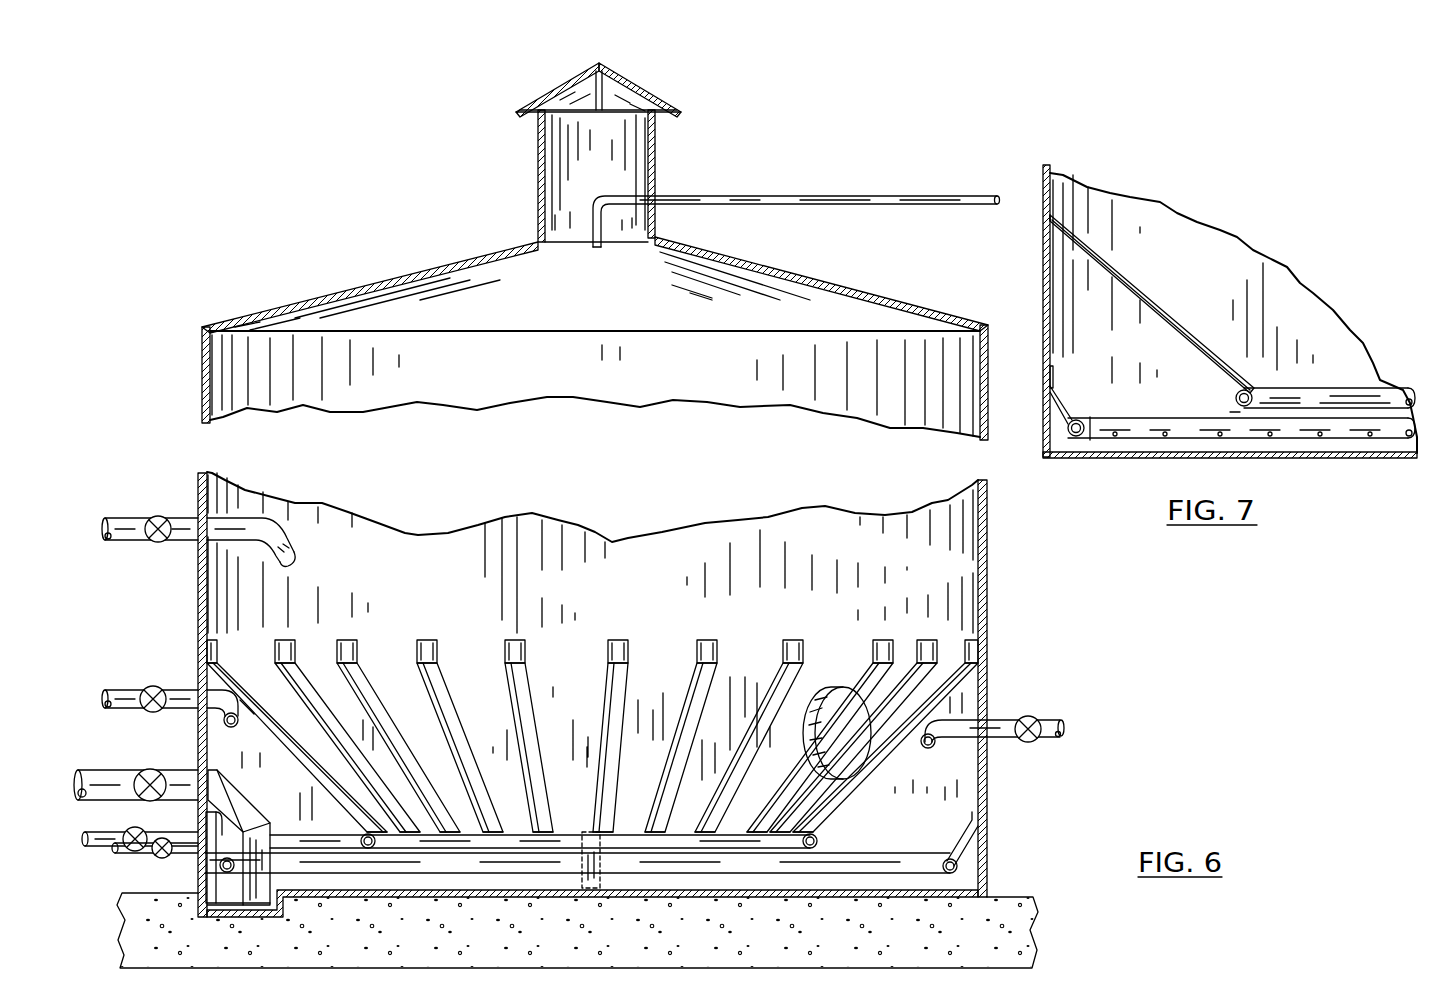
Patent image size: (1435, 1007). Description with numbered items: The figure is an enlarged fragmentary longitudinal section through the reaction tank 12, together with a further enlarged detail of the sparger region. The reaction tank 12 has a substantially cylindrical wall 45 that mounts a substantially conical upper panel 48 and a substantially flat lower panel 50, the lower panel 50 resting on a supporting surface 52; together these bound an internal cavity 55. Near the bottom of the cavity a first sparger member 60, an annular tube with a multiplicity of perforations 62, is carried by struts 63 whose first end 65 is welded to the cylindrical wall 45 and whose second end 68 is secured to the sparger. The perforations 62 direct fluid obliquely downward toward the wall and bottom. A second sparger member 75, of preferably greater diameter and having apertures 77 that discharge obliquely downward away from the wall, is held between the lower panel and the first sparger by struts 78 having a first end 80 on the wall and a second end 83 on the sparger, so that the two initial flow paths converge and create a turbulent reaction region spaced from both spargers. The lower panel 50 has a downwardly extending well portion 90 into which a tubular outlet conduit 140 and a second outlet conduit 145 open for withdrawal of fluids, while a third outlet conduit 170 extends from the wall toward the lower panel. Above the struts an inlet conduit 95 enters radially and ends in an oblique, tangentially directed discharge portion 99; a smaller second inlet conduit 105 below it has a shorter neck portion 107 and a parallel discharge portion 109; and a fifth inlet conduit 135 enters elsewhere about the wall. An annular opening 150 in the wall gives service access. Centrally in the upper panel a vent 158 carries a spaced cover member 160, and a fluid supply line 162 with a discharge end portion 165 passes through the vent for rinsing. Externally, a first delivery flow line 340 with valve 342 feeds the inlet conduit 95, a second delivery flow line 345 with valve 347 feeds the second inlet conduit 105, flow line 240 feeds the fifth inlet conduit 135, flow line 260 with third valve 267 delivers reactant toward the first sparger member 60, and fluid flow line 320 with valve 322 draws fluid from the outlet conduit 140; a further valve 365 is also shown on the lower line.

In FIG. 6, the reaction tank 12 is at (216, 307).
In FIG. 6, the cylindrical wall 45 is at (988, 578).
In FIG. 7, the cylindrical wall 45 is at (1043, 282).
In FIG. 6, the upper panel 48 is at (868, 290).
In FIG. 6, the lower panel 50 is at (848, 878).
In FIG. 7, the lower panel 50 is at (1307, 447).
In FIG. 6, the supporting surface 52 is at (998, 895).
In FIG. 6, the internal chamber or cavity 55 is at (243, 367).
In FIG. 6, the first sparger member 60 is at (818, 839).
In FIG. 7, the first sparger member 60 is at (1312, 388).
In FIG. 7, the perforations 62 is at (1233, 407).
In FIG. 6, the struts 63 is at (618, 691).
In FIG. 7, the struts 63 is at (1140, 290).
In FIG. 6, the first end 65 is at (799, 642).
In FIG. 7, the first end 65 is at (1053, 198).
In FIG. 6, the second end 68 is at (590, 825).
In FIG. 7, the second end 68 is at (1249, 386).
In FIG. 6, the second sparger member 75 is at (880, 876).
In FIG. 7, the second sparger member 75 is at (1177, 420).
In FIG. 7, the apertures 77 is at (1092, 438).
In FIG. 6, the struts 78 is at (958, 833).
In FIG. 7, the struts 78 is at (1068, 404).
In FIG. 7, the first end 80 is at (1053, 379).
In FIG. 7, the second end 83 is at (1093, 418).
In FIG. 6, the well portion 90 is at (240, 910).
In FIG. 6, the inlet conduit 95 is at (229, 520).
In FIG. 6, the discharge portion 99 is at (283, 550).
In FIG. 6, the second inlet conduit 105 is at (223, 690).
In FIG. 6, the neck portion 107 is at (233, 728).
In FIG. 6, the discharge portion 109 is at (257, 713).
In FIG. 6, the fifth inlet conduit 135 is at (950, 745).
In FIG. 6, the outlet conduit 140 is at (240, 800).
In FIG. 6, the second outlet conduit 145 is at (206, 883).
In FIG. 6, the annular opening 150 is at (818, 733).
In FIG. 6, the vent 158 is at (656, 152).
In FIG. 6, the cover member 160 is at (642, 92).
In FIG. 6, the fluid supply line 162 is at (800, 197).
In FIG. 6, the discharge end portion 165 is at (600, 246).
In FIG. 6, the third outlet conduit 170 is at (582, 890).
In FIG. 6, the fluid flow line 240 is at (999, 722).
In FIG. 6, the flow line 260 is at (112, 834).
In FIG. 6, the third valve 267 is at (150, 834).
In FIG. 6, the fluid flow line 320 is at (118, 777).
In FIG. 6, the valve 322 is at (150, 770).
In FIG. 6, the first delivery flow line 340 is at (125, 520).
In FIG. 6, the valve 342 is at (152, 546).
In FIG. 6, the second delivery flow line 345 is at (128, 690).
In FIG. 6, the valve 347 is at (152, 688).
In FIG. 6, the pipe 365 is at (130, 851).